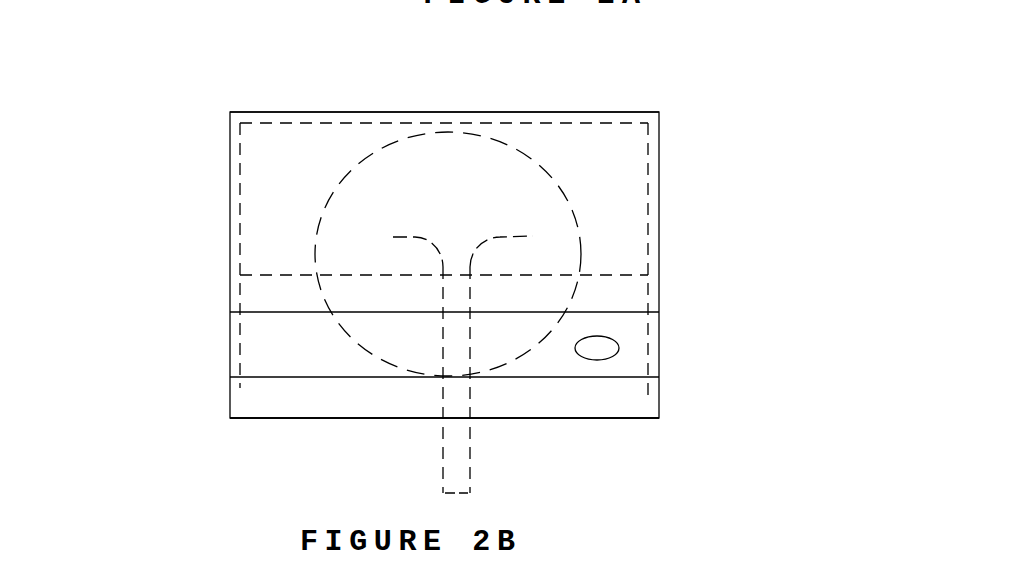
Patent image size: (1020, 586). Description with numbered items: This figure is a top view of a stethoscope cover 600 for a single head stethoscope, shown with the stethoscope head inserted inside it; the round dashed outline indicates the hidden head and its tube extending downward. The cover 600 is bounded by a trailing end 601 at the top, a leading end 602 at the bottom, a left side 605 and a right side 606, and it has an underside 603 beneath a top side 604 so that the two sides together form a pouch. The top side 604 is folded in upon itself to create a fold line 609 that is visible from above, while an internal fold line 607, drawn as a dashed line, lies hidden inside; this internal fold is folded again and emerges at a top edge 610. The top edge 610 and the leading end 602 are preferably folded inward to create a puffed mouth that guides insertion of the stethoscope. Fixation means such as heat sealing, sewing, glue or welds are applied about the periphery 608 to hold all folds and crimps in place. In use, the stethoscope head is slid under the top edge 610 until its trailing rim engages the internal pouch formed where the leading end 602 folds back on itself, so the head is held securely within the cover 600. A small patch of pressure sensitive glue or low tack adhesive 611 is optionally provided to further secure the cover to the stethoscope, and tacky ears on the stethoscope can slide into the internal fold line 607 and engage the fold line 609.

The stethoscope cover 600 is at (577, 215).
The trailing end 601 is at (378, 56).
The leading end 602 is at (363, 441).
The underside 603 is at (367, 84).
The top side 604 is at (327, 254).
The left side 605 is at (372, 373).
The right side 606 is at (729, 222).
The internal fold line 607 is at (657, 305).
The periphery 608 is at (360, 252).
The fold line 609 is at (556, 356).
The top edge 610 is at (622, 405).
The low tack adhesive 611 is at (733, 389).